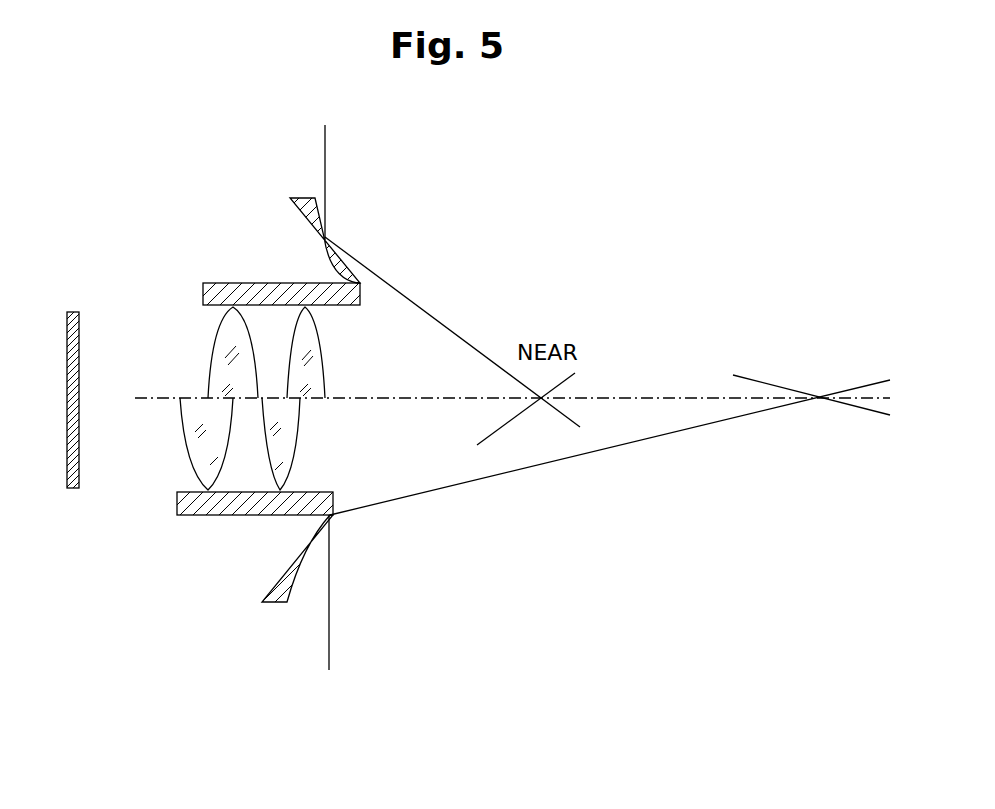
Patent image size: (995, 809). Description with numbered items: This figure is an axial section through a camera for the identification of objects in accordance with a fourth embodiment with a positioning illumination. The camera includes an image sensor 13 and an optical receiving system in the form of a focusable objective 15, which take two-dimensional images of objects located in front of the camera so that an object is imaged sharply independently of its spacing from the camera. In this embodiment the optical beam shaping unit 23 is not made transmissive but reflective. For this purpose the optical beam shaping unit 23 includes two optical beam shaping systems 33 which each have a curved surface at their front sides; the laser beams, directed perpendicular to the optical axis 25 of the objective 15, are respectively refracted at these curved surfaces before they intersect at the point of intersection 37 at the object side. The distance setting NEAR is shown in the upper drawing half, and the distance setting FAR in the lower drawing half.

The image sensor 13 is at (71, 312).
The objective 15 is at (302, 353).
The optical beam shaping unit 23 is at (233, 398).
The optical axis 25 is at (640, 397).
The optical beam shaping systems 33 is at (297, 198).
The point of intersection 37 is at (822, 400).